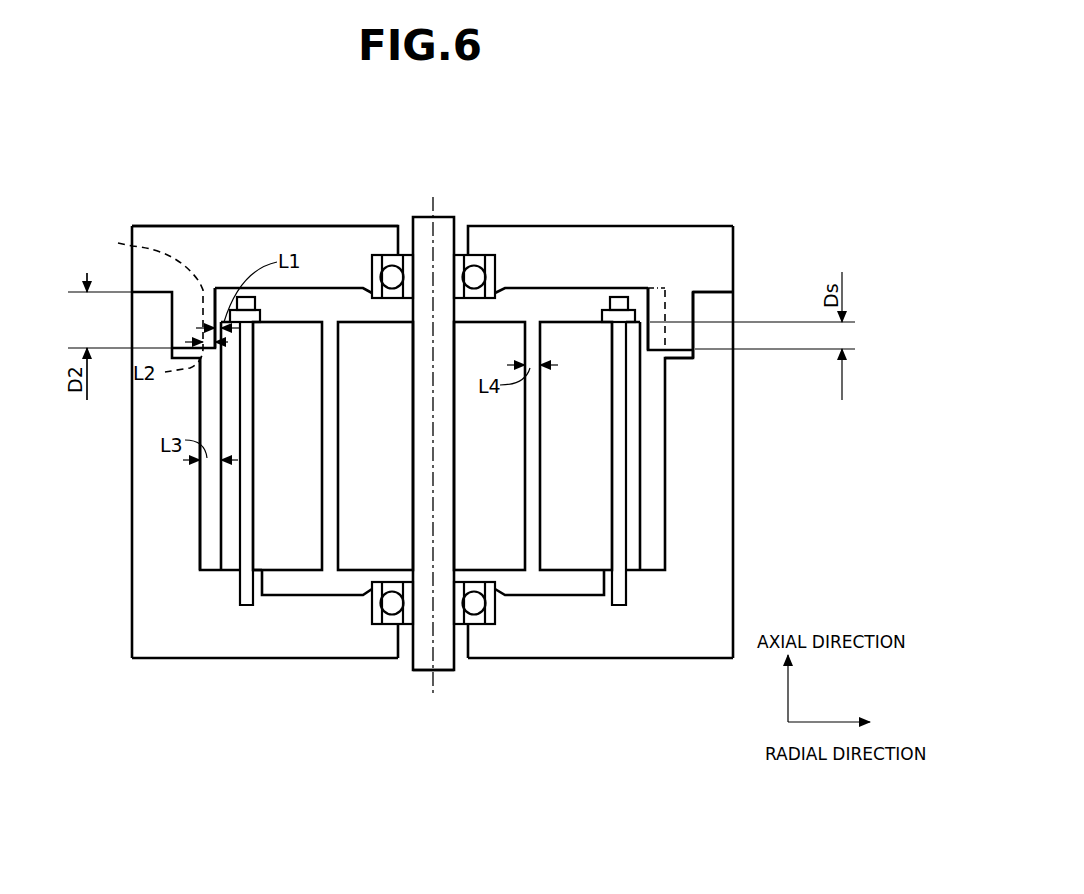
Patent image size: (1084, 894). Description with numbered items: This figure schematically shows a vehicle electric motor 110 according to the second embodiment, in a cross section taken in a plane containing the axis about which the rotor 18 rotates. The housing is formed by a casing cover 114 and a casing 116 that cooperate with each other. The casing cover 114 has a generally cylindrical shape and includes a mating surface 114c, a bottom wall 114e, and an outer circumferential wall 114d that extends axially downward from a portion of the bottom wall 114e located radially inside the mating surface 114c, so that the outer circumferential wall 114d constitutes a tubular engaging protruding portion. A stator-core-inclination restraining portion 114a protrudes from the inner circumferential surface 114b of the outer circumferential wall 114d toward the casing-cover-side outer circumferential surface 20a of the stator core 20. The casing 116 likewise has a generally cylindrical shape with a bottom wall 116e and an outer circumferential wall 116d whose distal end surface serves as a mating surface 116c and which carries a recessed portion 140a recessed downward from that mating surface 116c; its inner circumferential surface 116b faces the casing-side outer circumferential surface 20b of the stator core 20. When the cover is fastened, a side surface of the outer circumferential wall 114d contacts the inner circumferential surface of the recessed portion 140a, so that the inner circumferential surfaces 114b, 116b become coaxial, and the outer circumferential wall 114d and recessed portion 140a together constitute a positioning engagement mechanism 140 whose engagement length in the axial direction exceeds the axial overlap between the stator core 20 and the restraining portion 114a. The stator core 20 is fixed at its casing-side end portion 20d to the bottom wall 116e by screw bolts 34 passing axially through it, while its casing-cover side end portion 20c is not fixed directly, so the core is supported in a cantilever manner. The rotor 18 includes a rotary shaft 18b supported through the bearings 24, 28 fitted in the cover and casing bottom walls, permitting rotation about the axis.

The vehicle electric motor 110 is at (786, 181).
The casing cover 114 is at (183, 250).
The stator-core-inclination restraining portion 114a is at (218, 322).
The inner circumferential surface 114b is at (138, 302).
The mating surface 114c is at (700, 292).
The outer circumferential wall 114d is at (677, 313).
The bottom wall 114e is at (262, 238).
The casing 116 is at (290, 617).
The inner circumferential surface 116b is at (205, 493).
The mating surface 116c is at (710, 297).
The outer circumferential wall 116d is at (143, 560).
The bottom wall 116e is at (303, 648).
The positioning engagement mechanism 140 is at (565, 181).
The recessed portion 140a is at (673, 365).
The rotor 18 is at (505, 530).
The rotary shaft 18b is at (418, 657).
The stator core 20 is at (565, 523).
The casing-cover-side outer circumferential surface 20a is at (218, 392).
The casing-side outer circumferential surface 20b is at (217, 527).
The casing-cover side end portion 20c is at (293, 311).
The casing-side end portion 20d is at (641, 578).
The bearing 24 is at (410, 262).
The bearing 28 is at (457, 625).
The screw bolts 34 is at (245, 585).